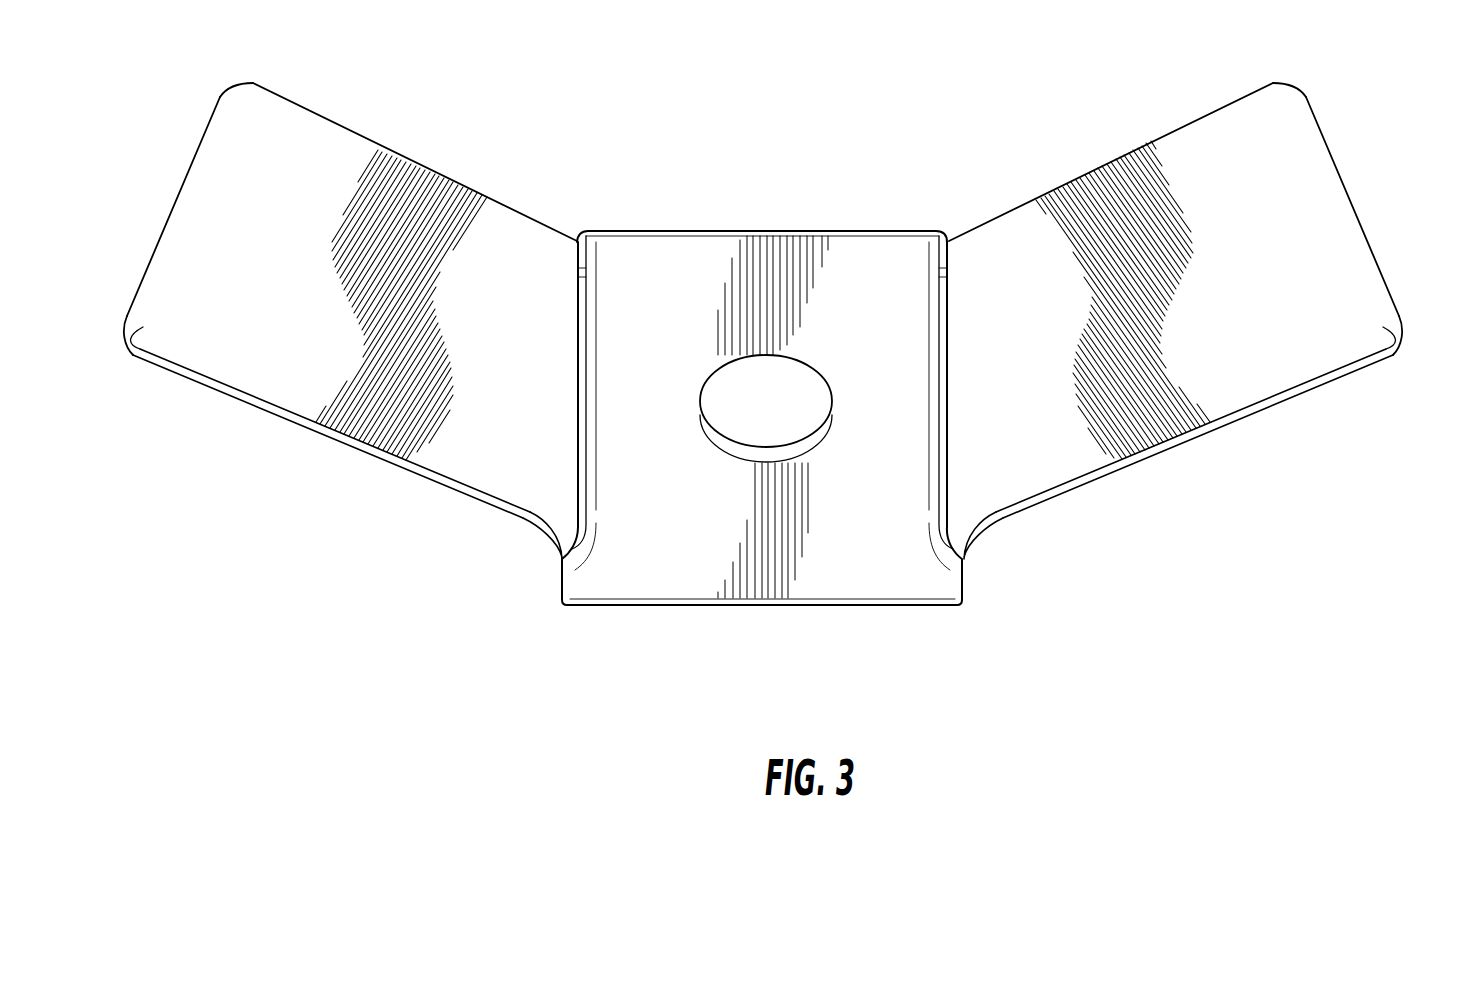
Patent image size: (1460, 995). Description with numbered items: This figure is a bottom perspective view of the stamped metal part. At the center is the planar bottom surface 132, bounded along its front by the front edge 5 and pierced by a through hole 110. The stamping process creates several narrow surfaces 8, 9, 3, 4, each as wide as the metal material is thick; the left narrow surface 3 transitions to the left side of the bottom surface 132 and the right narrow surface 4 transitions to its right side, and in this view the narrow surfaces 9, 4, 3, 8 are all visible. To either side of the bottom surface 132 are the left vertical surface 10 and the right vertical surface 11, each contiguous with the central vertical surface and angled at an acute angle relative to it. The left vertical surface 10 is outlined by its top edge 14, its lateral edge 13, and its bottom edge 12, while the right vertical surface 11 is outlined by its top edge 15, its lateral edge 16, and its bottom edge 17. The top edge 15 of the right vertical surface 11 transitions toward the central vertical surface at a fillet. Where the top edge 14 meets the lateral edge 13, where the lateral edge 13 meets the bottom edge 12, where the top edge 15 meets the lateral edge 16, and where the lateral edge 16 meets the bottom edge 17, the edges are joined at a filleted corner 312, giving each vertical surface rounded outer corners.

The left narrow surface 3 is at (944, 452).
The right narrow surface 4 is at (583, 458).
The front edge 5 is at (770, 231).
The narrow surface 8 is at (1243, 412).
The narrow surface 9 is at (356, 446).
The left vertical surface 10 is at (382, 267).
The right vertical surface 11 is at (1170, 190).
The bottom edge of the left vertical surface 12 is at (255, 397).
The lateral edge of the left vertical surface 13 is at (176, 200).
The top edge of the left vertical surface 14 is at (485, 196).
The top edge of the right vertical surface 15 is at (1078, 178).
The lateral edge of the right vertical surface 16 is at (1338, 170).
The bottom edge of the right vertical surface 17 is at (1316, 376).
The through hole 110 is at (780, 425).
The bottom surface 132 is at (672, 477).
The filleted corner 312 is at (238, 84).